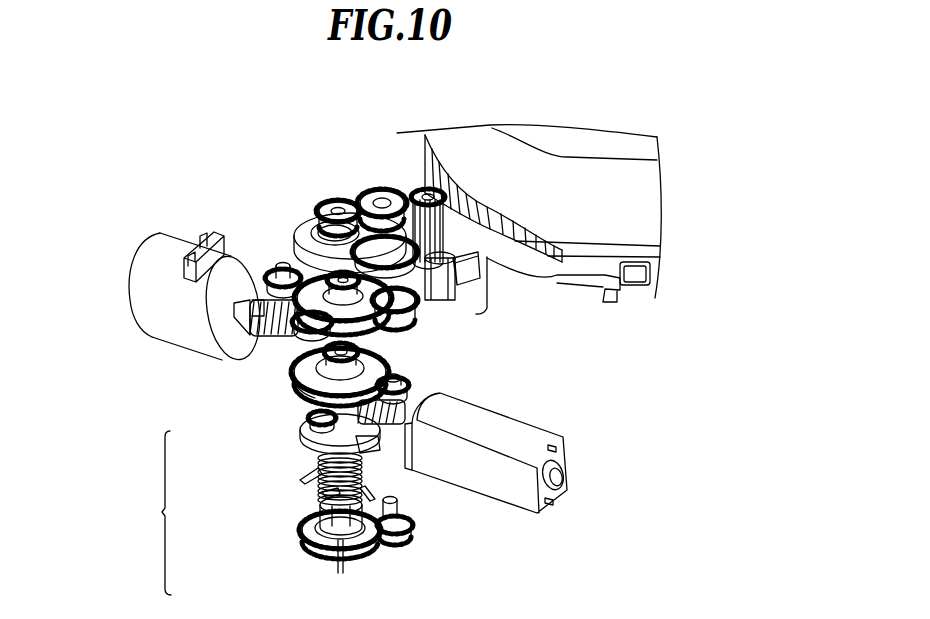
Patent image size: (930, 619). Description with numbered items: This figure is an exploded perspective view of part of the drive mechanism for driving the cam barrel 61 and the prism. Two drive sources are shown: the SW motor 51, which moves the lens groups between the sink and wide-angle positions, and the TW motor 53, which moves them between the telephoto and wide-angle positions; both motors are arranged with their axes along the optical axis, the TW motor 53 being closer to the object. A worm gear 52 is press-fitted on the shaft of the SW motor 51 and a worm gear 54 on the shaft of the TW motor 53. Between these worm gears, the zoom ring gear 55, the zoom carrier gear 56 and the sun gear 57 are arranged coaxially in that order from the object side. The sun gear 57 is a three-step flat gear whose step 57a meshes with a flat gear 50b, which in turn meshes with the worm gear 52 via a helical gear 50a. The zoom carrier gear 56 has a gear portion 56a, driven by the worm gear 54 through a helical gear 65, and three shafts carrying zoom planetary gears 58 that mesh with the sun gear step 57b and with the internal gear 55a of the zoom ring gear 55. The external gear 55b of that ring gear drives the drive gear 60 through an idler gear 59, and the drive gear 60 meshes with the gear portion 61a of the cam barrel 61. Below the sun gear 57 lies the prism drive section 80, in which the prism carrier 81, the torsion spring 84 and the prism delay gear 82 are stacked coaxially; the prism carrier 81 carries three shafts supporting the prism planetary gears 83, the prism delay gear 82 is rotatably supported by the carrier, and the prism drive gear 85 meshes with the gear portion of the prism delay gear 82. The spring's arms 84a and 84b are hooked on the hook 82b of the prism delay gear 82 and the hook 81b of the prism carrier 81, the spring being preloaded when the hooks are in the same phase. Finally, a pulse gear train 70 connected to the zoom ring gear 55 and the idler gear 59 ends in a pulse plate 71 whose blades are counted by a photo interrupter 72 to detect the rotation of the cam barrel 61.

The helical gear 50a is at (440, 406).
The flat gear 50b is at (397, 392).
The SW motor 51 is at (506, 449).
The worm gear 52 is at (413, 447).
The TW motor 53 is at (150, 270).
The worm gear 54 is at (220, 257).
The zoom ring gear 55 is at (302, 183).
The internal gear 55a is at (297, 210).
The external gear 55b is at (323, 205).
The zoom carrier gear 56 is at (376, 330).
The gear portion 56a is at (300, 332).
The sun gear 57 is at (438, 378).
The sun gear 57a is at (268, 400).
The sun gear 57b is at (363, 352).
The zoom planetary gears 58 is at (393, 328).
The idler gear 59 is at (373, 187).
The drive gear 60 is at (412, 188).
The cam barrel 61 is at (558, 191).
The gear portion 61a is at (450, 170).
The helical gear 65 is at (262, 342).
The pulse gear train 70 is at (492, 282).
The pulse plate 71 is at (465, 255).
The photo interrupter 72 is at (483, 235).
The prism drive section 80 is at (294, 507).
The prism carrier 81 is at (268, 477).
The hook 81b is at (318, 470).
The prism delay gear 82 is at (278, 557).
The hook 82b is at (343, 572).
The prism planetary gears 83 is at (302, 430).
The torsion spring 84 is at (318, 526).
The arm 84a is at (373, 491).
The arm 84b is at (322, 492).
The prism drive gear 85 is at (407, 540).